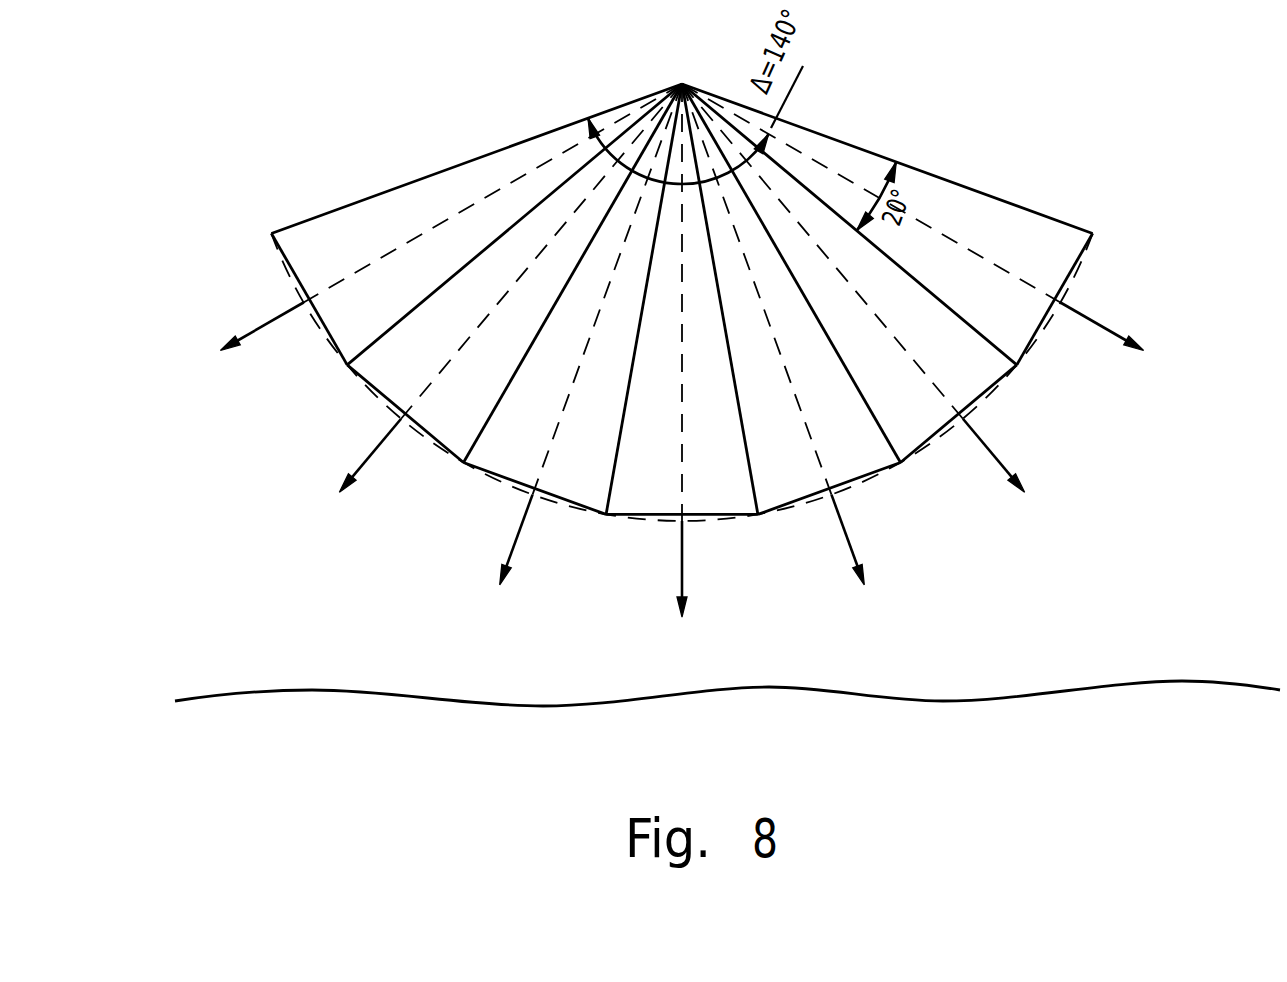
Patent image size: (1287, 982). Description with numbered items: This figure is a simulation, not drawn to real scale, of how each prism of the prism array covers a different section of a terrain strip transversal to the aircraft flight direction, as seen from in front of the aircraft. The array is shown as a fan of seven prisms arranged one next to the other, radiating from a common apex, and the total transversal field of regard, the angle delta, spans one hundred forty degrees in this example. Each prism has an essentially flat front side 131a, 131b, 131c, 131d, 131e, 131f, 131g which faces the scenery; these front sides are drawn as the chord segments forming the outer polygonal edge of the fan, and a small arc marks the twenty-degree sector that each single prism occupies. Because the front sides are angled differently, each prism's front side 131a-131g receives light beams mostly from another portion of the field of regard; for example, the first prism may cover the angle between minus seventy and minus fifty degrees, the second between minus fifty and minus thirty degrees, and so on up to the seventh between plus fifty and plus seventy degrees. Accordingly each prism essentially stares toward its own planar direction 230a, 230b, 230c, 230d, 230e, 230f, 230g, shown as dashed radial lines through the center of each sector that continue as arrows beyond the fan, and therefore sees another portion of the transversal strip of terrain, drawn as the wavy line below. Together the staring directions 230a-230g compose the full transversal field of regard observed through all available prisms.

The front side of first prism 131a is at (302, 288).
The front side of second prism 131b is at (362, 407).
The front side of third prism 131c is at (503, 483).
The front side of fourth prism 131d is at (650, 517).
The front side of fifth prism 131e is at (849, 484).
The front side of sixth prism 131f is at (988, 398).
The front side of seventh prism 131g is at (1086, 270).
The planar staring direction of first prism 230a is at (416, 227).
The planar staring direction of second prism 230b is at (484, 309).
The planar staring direction of third prism 230c is at (571, 358).
The planar staring direction of fourth prism 230d is at (693, 372).
The planar staring direction of fifth prism 230e is at (798, 356).
The planar staring direction of sixth prism 230f is at (878, 307).
The planar staring direction of seventh prism 230g is at (953, 226).